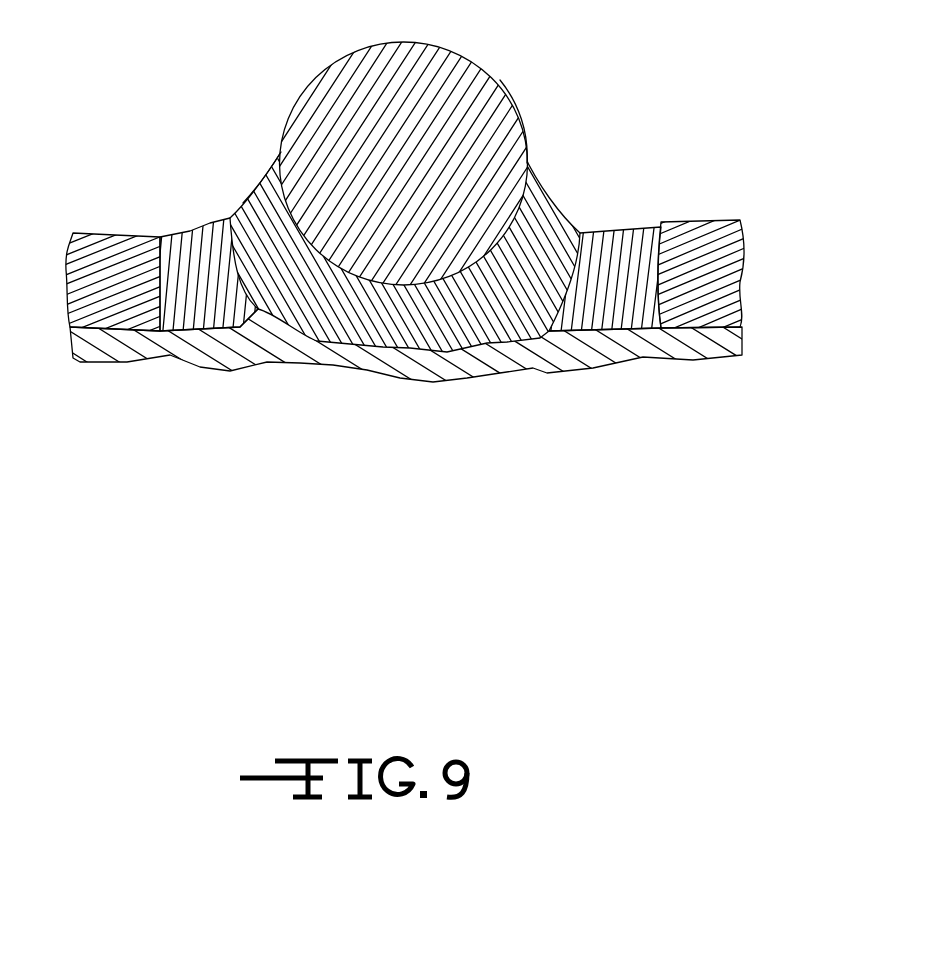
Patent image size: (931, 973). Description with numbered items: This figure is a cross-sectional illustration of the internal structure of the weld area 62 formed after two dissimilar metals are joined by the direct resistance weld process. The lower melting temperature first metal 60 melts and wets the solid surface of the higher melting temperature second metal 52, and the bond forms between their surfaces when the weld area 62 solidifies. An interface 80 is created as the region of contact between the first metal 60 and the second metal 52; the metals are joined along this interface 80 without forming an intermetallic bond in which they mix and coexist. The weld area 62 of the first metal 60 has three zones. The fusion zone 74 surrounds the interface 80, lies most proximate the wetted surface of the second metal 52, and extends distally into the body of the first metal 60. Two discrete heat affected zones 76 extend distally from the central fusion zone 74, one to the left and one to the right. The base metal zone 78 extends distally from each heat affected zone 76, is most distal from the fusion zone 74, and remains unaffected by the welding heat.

The second metal 52 is at (311, 80).
The first metal 60 is at (760, 217).
The weld area 62 is at (536, 97).
The fusion zone 74 is at (517, 233).
The heat affected zone 76 is at (213, 232).
The base metal zone 78 is at (110, 245).
The interface 80 is at (265, 198).